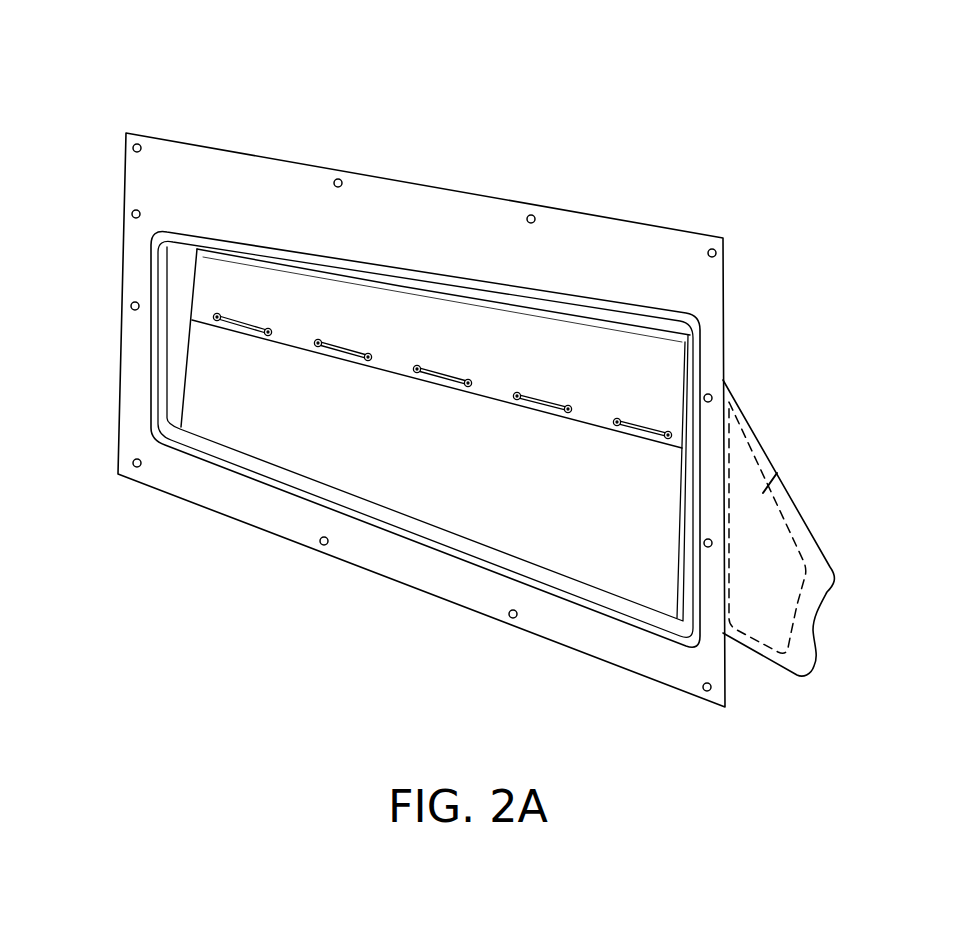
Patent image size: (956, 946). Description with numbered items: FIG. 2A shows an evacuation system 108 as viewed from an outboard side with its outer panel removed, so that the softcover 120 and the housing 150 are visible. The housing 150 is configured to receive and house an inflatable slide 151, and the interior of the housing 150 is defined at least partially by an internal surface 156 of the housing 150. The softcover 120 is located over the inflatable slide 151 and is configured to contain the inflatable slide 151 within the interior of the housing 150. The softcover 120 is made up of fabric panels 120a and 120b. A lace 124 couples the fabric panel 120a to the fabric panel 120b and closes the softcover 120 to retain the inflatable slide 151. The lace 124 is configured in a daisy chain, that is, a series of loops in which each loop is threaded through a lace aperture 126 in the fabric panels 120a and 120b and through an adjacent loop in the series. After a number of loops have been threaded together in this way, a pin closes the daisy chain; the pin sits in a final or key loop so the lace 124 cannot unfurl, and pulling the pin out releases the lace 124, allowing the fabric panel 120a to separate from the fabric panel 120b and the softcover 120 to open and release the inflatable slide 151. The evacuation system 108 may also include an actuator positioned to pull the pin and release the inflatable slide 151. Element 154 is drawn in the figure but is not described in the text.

The evacuation system 108 is at (137, 73).
The softcover 120 is at (183, 317).
The fabric panel 120a is at (280, 323).
The fabric panel 120b is at (273, 393).
The lace 124 is at (337, 350).
The lace aperture 126 is at (470, 381).
The housing 150 is at (803, 547).
The inflatable slide 151 is at (787, 467).
The flap edge 154 is at (750, 428).
The internal surface 156 is at (178, 362).